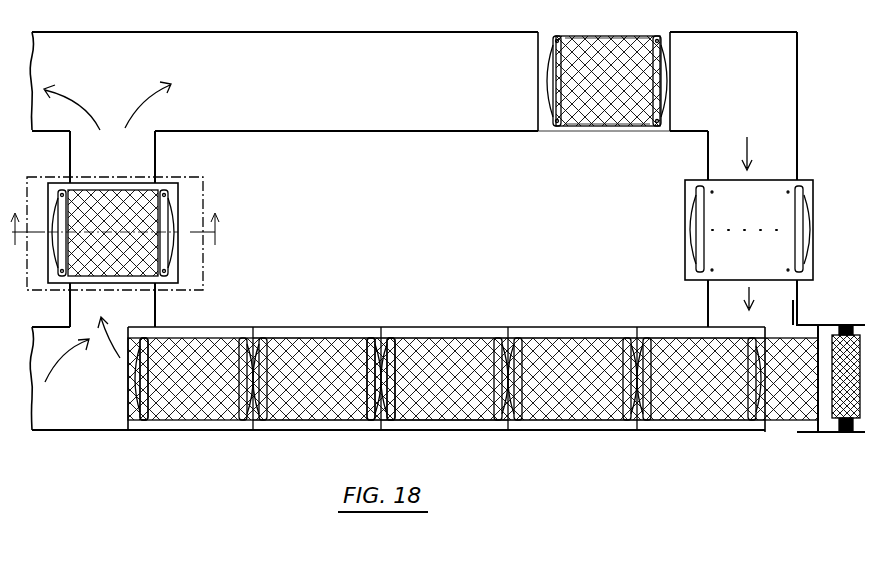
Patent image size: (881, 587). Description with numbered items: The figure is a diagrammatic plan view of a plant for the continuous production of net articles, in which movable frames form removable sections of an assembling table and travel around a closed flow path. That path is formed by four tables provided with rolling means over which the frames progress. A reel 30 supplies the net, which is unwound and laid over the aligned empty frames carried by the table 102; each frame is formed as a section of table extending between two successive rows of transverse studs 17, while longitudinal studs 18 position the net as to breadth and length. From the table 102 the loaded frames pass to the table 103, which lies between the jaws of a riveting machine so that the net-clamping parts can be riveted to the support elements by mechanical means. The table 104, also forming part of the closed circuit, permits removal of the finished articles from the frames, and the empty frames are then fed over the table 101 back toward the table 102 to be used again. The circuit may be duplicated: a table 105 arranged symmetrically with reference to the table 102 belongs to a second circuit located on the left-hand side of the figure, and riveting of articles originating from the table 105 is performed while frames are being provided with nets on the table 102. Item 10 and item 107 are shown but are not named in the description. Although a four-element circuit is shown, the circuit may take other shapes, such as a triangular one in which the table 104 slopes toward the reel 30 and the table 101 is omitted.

The housing 10 is at (57, 47).
The table 101 is at (782, 155).
The table 104 is at (322, 95).
The table 105 is at (78, 412).
The table 103 is at (135, 297).
The filter unit 107 is at (190, 207).
The studs 18 is at (322, 378).
The studs 17 is at (135, 425).
The table 102 is at (718, 425).
The reel 30 is at (855, 383).